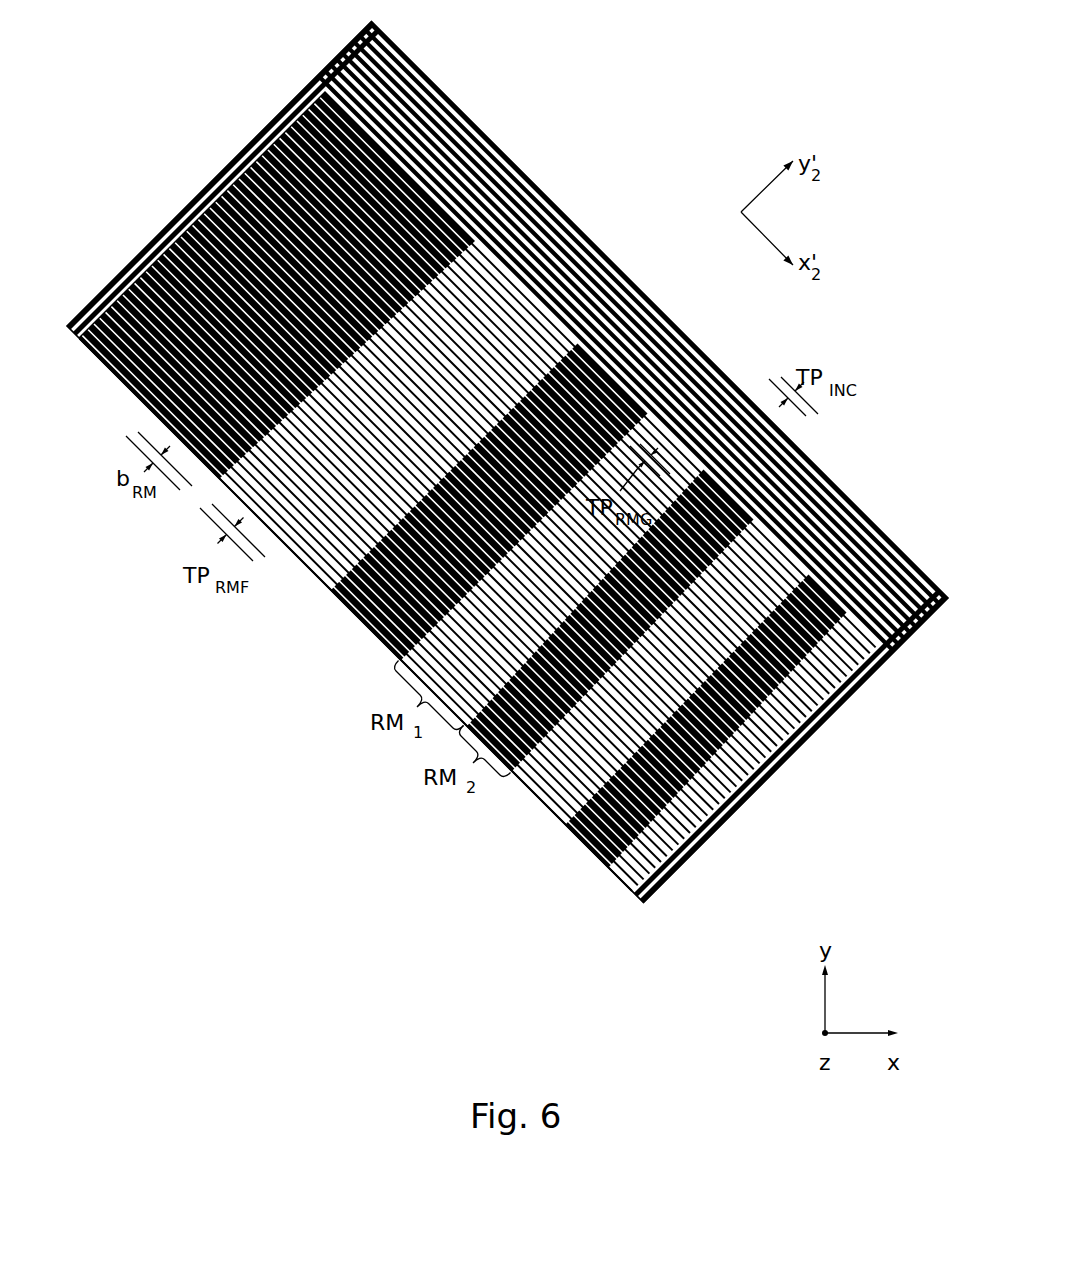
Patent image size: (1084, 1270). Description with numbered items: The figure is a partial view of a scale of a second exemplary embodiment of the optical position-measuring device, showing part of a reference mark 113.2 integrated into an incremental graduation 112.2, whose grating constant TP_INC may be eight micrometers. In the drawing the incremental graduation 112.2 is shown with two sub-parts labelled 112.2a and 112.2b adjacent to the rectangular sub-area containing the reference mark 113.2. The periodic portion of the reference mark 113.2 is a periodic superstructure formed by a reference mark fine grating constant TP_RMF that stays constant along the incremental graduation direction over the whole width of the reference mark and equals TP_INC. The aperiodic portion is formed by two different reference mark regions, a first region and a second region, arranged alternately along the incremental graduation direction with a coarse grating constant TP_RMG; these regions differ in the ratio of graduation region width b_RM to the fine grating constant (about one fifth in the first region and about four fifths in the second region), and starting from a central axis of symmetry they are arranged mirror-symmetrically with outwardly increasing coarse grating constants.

The incremental graduation 112.2 is at (632, 337).
The first incremental graduation 112.2a is at (470, 116).
The second incremental graduation 112.2b is at (485, 133).
The reference mark 113.2 is at (507, 462).